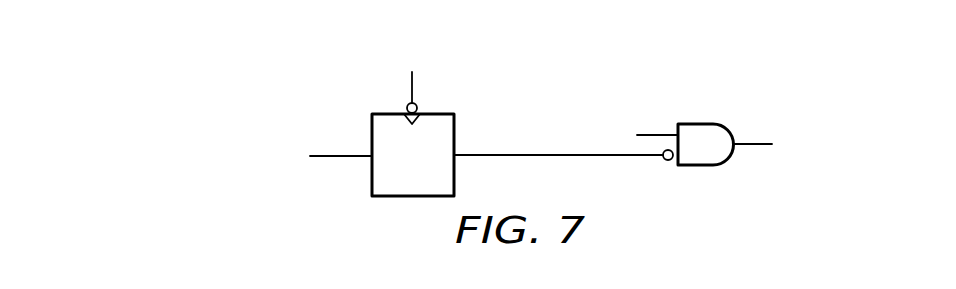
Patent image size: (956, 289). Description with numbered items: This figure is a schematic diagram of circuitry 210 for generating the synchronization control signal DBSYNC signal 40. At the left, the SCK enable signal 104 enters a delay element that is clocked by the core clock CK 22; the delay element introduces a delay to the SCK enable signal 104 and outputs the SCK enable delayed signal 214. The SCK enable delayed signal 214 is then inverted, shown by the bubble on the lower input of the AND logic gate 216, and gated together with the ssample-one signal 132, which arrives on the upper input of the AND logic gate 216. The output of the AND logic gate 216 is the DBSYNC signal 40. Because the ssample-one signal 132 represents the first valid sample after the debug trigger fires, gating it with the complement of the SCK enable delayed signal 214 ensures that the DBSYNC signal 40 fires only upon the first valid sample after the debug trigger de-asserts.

The circuitry 210 is at (573, 87).
The core clock CK 22 is at (411, 91).
The SCK enable signal 104 is at (346, 157).
The SCK enable delayed signal 214 is at (510, 153).
The ssample 1 signal 132 is at (658, 134).
The AND logic gate 216 is at (703, 167).
The DBSYNC signal 40 is at (748, 142).